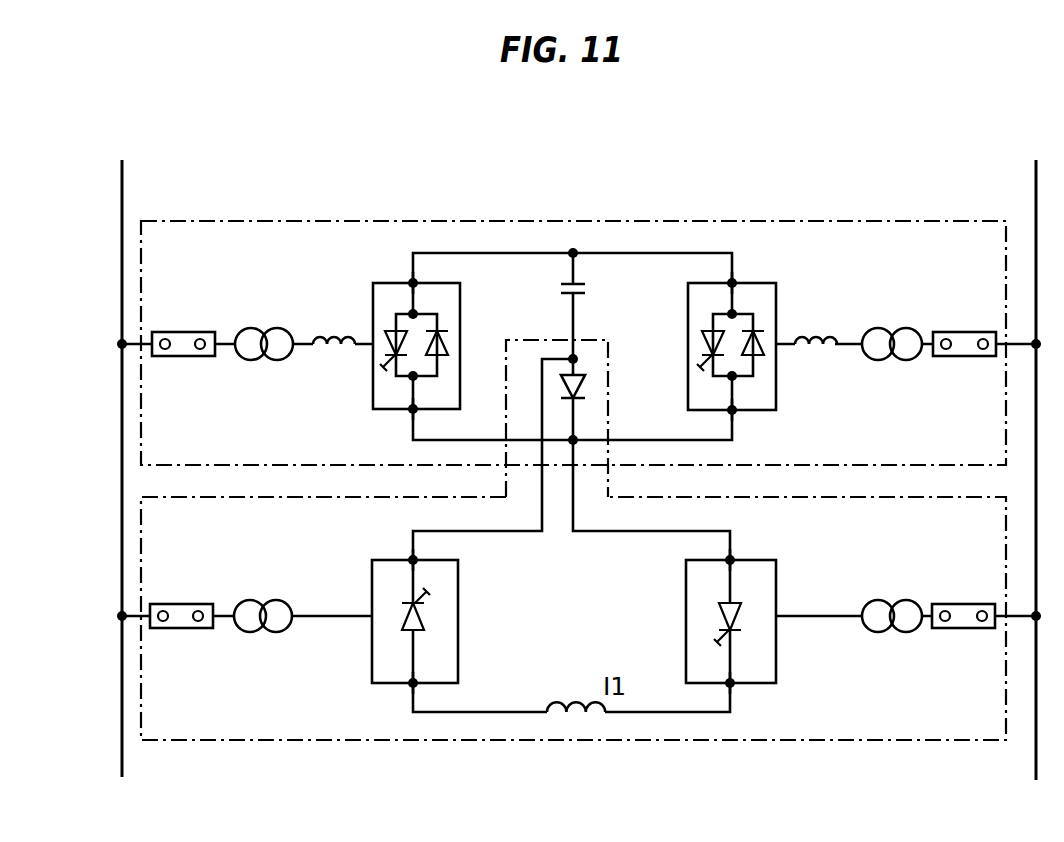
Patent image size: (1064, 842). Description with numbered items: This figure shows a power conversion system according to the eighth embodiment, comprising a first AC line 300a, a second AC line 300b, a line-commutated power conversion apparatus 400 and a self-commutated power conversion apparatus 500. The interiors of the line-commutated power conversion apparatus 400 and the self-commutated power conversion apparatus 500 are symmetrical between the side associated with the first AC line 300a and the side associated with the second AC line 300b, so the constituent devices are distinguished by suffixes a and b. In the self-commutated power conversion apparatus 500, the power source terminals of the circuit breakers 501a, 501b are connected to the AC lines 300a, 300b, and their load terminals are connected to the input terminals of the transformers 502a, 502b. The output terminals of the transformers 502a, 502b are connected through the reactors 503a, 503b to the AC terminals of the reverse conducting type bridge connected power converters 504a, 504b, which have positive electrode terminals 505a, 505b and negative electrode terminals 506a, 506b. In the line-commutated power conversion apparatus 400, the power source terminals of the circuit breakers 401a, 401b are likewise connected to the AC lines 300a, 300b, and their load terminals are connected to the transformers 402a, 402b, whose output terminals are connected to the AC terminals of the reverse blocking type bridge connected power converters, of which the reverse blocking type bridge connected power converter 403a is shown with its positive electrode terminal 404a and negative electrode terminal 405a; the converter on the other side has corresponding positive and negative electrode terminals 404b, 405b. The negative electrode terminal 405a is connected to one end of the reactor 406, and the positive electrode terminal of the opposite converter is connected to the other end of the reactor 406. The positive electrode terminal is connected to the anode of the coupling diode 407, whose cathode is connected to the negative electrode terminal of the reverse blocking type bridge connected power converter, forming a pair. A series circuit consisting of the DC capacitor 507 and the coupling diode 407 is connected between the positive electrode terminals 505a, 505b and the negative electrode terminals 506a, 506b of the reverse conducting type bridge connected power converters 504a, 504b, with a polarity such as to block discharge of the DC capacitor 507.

The first AC line 300a is at (121, 192).
The second AC line 300b is at (1035, 192).
The self-commutated power conversion apparatus 500 is at (869, 194).
The line-commutated power conversion apparatus 400 is at (819, 782).
The circuit breaker 501a is at (183, 331).
The transformer 502a is at (258, 328).
The reactor 503a is at (333, 336).
The reverse conducting type bridge connected power converter 504a is at (495, 305).
The positive electrode terminal 505a is at (412, 281).
The negative electrode terminal 506a is at (412, 411).
The DC capacitor 507 is at (586, 289).
The coupling diode 407 is at (586, 388).
The reverse conducting type bridge connected power converter 504b is at (687, 312).
The positive electrode terminal 505b is at (733, 281).
The negative electrode terminal 506b is at (733, 412).
The reactor 503b is at (810, 336).
The transformer 502b is at (884, 328).
The circuit breaker 501b is at (964, 331).
The circuit breaker 401a is at (182, 603).
The transformer 402a is at (257, 600).
The reverse blocking type bridge connected power converter 403a is at (495, 585).
The positive electrode terminal 404a is at (412, 558).
The negative electrode terminal 405a is at (412, 685).
The reactor 406 is at (560, 708).
The negative electrode terminal 405b is at (731, 558).
The positive electrode terminal 404b is at (731, 685).
The transformer 402b is at (884, 600).
The circuit breaker 401b is at (964, 603).